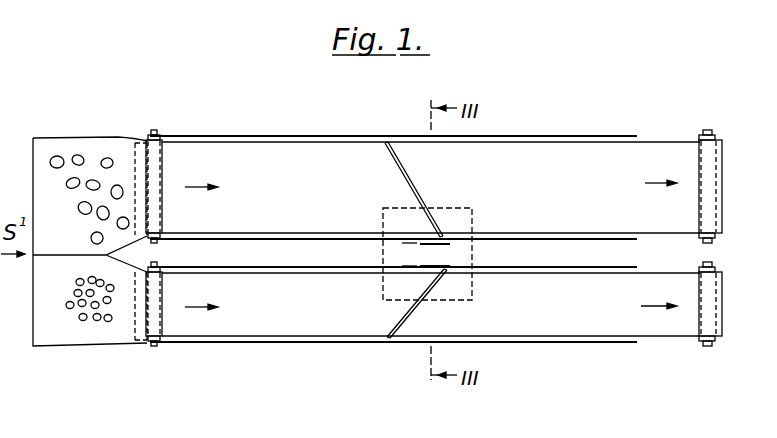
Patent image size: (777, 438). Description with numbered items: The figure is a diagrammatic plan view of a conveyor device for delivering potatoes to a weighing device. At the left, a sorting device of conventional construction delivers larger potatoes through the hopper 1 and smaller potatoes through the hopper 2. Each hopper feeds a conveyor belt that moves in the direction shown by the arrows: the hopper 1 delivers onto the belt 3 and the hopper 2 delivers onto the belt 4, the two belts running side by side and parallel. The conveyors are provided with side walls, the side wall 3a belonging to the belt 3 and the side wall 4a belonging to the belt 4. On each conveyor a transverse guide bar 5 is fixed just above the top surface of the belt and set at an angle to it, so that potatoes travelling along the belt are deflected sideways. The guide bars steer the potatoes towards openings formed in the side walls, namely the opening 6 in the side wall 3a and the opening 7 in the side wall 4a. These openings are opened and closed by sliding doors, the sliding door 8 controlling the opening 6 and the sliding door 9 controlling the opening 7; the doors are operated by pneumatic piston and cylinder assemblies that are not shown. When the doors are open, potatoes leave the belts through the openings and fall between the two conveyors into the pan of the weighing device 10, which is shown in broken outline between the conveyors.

The hopper 1 is at (118, 146).
The hopper 2 is at (123, 340).
The belt 3 is at (208, 157).
The side wall 3a is at (197, 241).
The belt 4 is at (267, 330).
The side wall 4a is at (313, 269).
The transverse guide bar 5 is at (410, 184).
The opening 6 is at (424, 237).
The opening 7 is at (425, 270).
The sliding door 8 is at (437, 245).
The sliding door 9 is at (413, 247).
The weighing device 10 is at (455, 210).